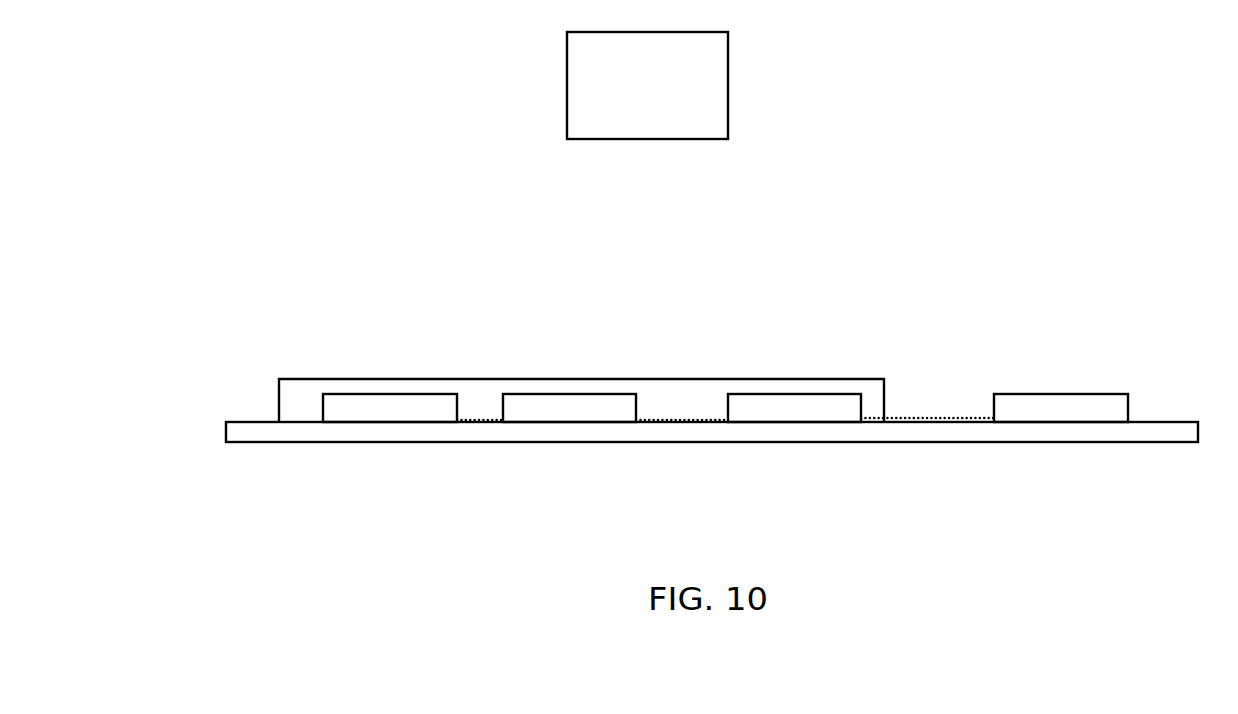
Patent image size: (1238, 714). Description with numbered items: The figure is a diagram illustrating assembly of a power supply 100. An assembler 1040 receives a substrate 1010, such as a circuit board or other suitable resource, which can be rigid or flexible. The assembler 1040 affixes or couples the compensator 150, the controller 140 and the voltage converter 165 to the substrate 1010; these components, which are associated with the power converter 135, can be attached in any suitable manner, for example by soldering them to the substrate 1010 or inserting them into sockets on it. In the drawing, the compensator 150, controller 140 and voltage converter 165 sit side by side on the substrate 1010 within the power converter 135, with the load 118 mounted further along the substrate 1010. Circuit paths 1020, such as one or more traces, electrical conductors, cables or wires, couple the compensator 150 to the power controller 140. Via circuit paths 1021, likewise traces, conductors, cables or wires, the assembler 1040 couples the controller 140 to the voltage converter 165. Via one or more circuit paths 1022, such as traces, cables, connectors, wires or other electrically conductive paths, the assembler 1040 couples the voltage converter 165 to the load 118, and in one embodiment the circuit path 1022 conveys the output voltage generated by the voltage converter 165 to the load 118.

The assembler 1040 is at (684, 208).
The power supply 100 is at (183, 326).
The substrate 1010 is at (1158, 442).
The power converter 135 is at (503, 394).
The compensator 150 is at (347, 394).
The controller 140 is at (560, 395).
The voltage converter 165 is at (812, 394).
The load 118 is at (1083, 394).
The circuit paths 1020 is at (484, 421).
The circuit paths 1021 is at (683, 421).
The circuit paths 1022 is at (928, 416).